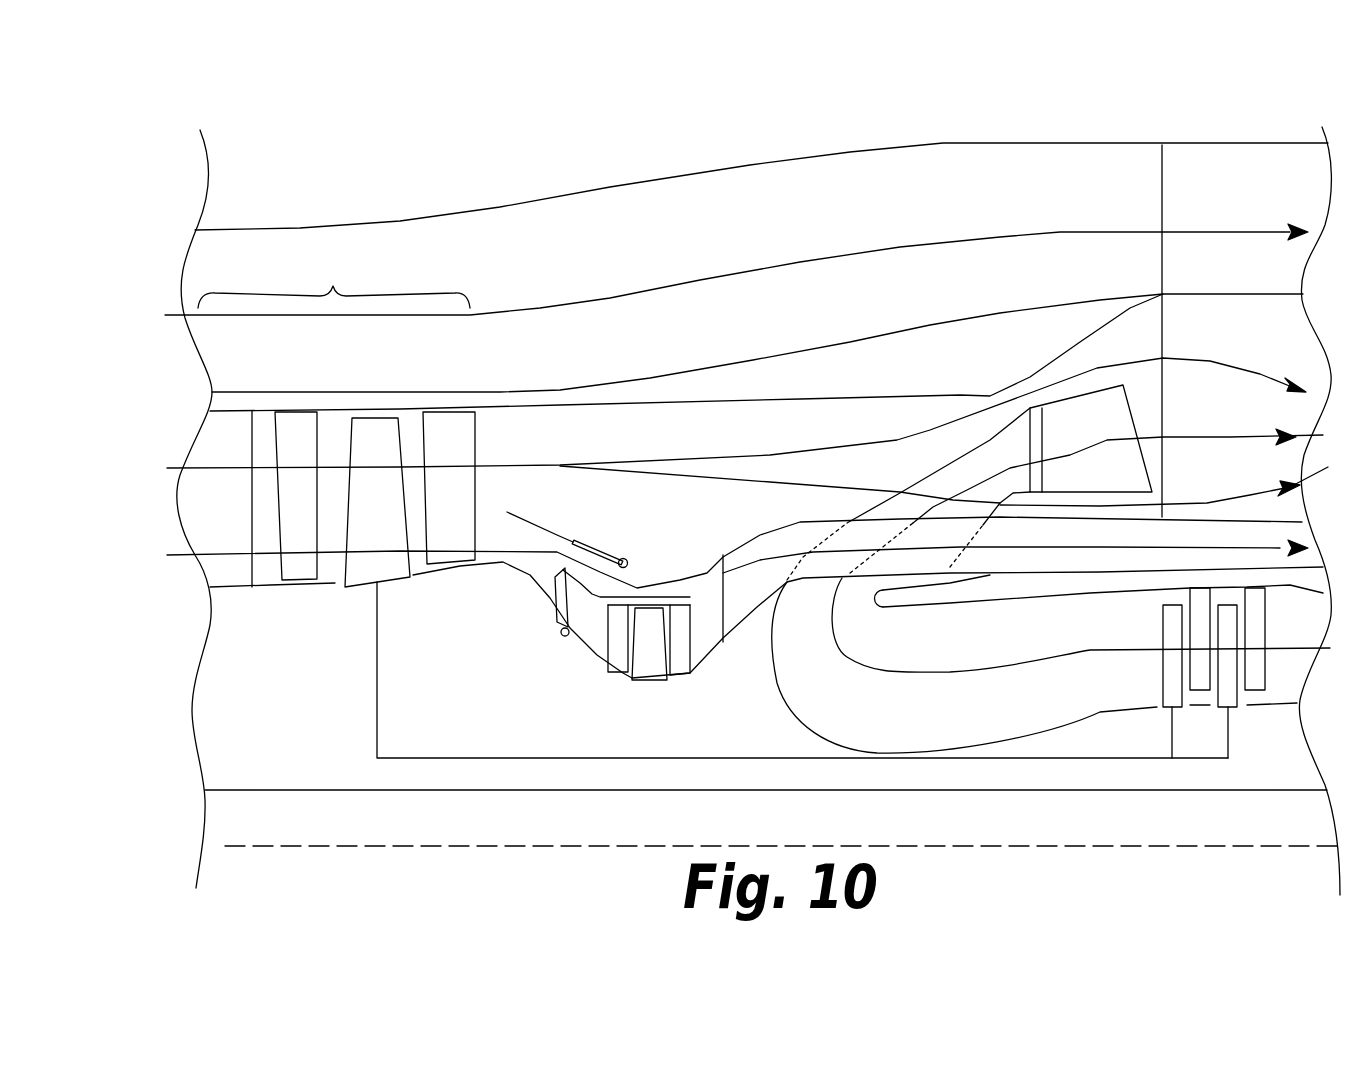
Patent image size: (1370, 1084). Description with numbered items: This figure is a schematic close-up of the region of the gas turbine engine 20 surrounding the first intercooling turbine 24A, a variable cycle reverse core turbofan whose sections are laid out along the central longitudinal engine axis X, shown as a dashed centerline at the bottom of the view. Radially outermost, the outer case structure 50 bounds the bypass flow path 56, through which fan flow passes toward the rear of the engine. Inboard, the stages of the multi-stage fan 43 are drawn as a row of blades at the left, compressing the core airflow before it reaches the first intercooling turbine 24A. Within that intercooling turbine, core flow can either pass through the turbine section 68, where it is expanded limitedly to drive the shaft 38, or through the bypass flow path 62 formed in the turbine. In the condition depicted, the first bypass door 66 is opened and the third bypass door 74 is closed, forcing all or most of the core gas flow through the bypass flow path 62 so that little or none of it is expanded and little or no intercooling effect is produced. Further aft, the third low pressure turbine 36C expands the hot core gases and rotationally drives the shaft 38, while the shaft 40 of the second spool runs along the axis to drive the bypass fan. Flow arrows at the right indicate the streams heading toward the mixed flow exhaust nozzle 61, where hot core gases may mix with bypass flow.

The gas turbine engine 20 is at (1155, 110).
The outer case structure 50 is at (943, 142).
The bypass flow path 56 is at (1060, 189).
The multi-stage fan 43 is at (336, 420).
The mixed flow exhaust nozzle 61 is at (1300, 416).
The first bypass door 66 is at (602, 547).
The third bypass door 74 is at (552, 605).
The first intercooling turbine 24A is at (508, 652).
The turbine section 68 is at (608, 632).
The bypass flow path 62 is at (692, 592).
The shaft 38 is at (705, 757).
The third low pressure turbine 36C is at (1252, 720).
The shaft 40 is at (918, 790).
The central longitudinal engine axis X is at (1198, 848).